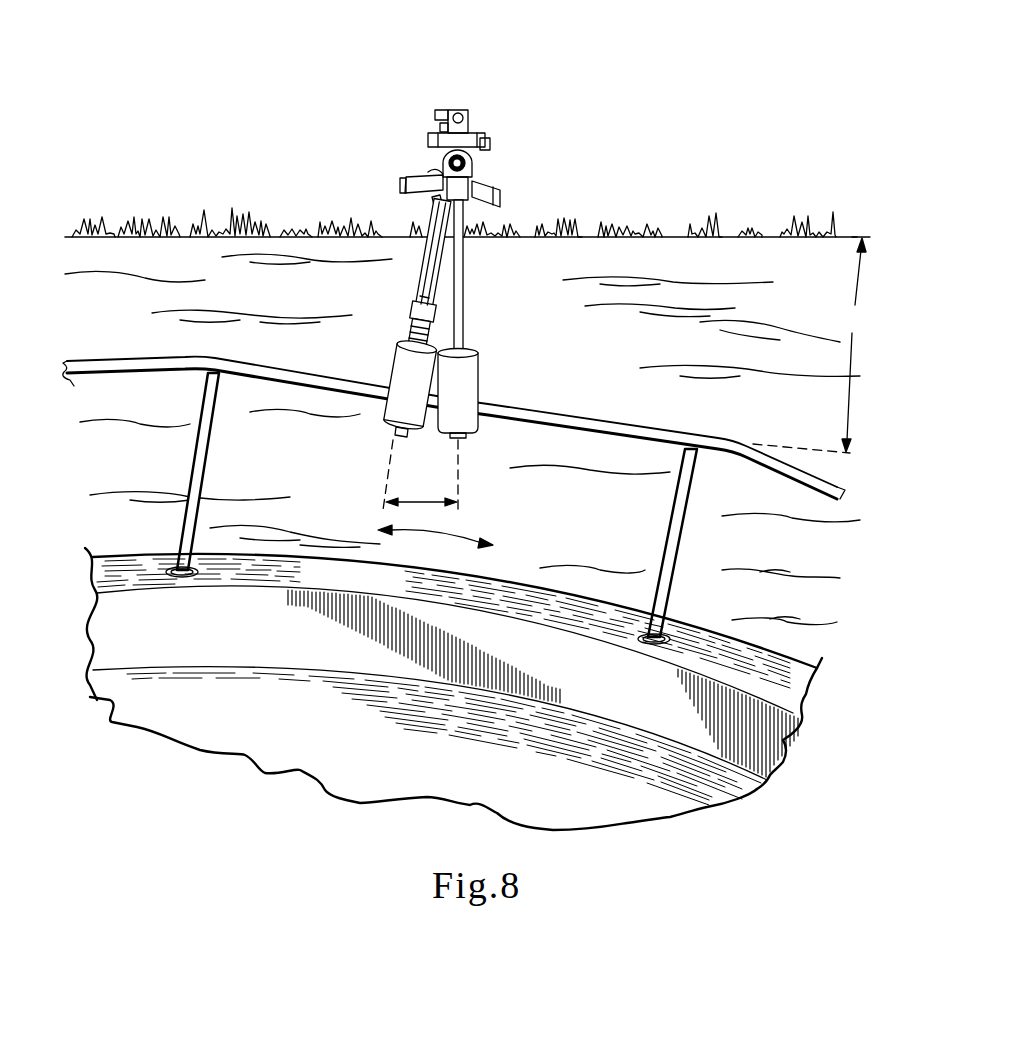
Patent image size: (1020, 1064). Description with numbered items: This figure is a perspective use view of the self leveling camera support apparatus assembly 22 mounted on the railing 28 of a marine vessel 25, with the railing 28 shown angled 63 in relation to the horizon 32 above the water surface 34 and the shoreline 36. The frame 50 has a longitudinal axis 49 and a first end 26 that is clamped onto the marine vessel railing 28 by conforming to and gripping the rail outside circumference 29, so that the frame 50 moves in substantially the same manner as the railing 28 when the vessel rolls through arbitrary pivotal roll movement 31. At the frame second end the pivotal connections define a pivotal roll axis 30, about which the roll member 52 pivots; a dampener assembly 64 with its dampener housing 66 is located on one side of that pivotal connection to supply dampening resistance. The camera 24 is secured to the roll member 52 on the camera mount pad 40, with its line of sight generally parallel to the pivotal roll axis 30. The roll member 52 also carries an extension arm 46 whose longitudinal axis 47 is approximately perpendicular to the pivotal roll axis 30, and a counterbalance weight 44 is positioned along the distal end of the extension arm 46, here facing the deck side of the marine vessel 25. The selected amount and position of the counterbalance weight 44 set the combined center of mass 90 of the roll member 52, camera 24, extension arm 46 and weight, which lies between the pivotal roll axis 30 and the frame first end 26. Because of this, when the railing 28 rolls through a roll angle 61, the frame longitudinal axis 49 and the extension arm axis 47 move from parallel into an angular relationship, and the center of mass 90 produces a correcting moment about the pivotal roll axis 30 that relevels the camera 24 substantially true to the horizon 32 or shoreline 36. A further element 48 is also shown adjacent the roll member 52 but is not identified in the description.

The self leveling camera support apparatus assembly 22 is at (423, 237).
The camera 24 is at (453, 110).
The marine vessel 25 is at (262, 640).
The frame first end 26 is at (392, 423).
The marine vessel railing 28 is at (807, 486).
The rail outside circumference 29 is at (815, 474).
The pivotal roll axis 30 is at (443, 165).
The arbitrary pivotal roll movement 31 is at (450, 535).
The horizon 32 is at (630, 237).
The water surface 34 is at (813, 270).
The shoreline 36 is at (240, 230).
The camera mount pad 40 is at (473, 133).
The counterbalance weight 44 is at (474, 383).
The extension arm 46 is at (464, 306).
The extension arm longitudinal axis 47 is at (460, 473).
The mounting bracket 48 is at (498, 200).
The frame longitudinal axis 49 is at (390, 473).
The frame 50 is at (422, 286).
The roll member 52 is at (430, 137).
The roll angle 61 is at (421, 490).
The railing angle relative to horizon 63 is at (856, 344).
The dampener assembly 64 is at (403, 185).
The dampener housing 66 is at (426, 199).
The center of mass 90 is at (444, 258).